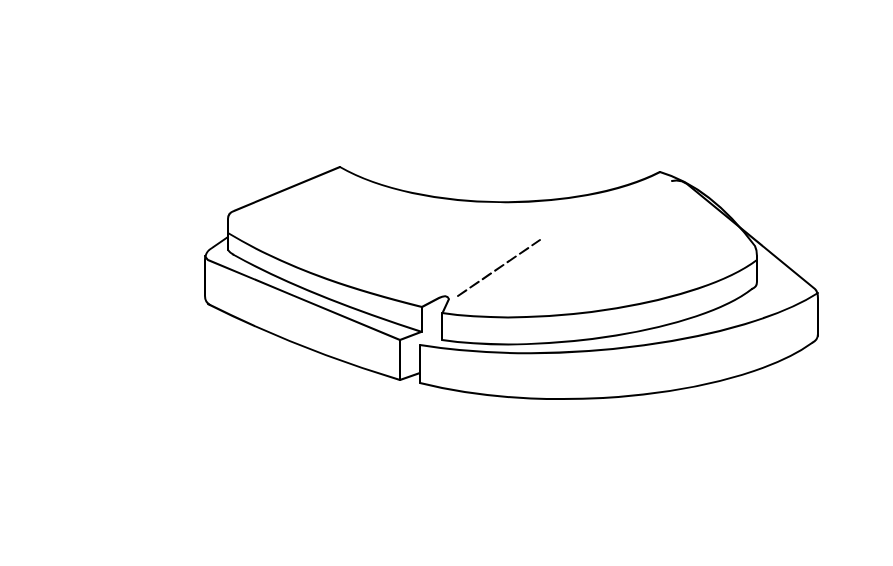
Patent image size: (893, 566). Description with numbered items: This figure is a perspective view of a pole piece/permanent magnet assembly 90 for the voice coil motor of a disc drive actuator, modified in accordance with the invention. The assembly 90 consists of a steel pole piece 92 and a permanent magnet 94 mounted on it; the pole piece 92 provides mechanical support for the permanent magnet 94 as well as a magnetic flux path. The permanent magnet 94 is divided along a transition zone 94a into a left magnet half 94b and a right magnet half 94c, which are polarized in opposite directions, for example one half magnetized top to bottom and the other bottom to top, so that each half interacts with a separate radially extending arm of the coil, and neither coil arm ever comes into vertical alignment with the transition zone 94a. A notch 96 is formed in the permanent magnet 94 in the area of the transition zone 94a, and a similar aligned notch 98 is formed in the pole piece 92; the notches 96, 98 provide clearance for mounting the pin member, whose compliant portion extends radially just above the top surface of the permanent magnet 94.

The pole piece/permanent magnet assembly 90 is at (183, 135).
The pole piece 92 is at (303, 330).
The permanent magnet 94 is at (580, 198).
The transition zone 94a is at (533, 245).
The left magnet half 94b is at (316, 204).
The right magnet half 94c is at (655, 240).
The notch 96 is at (442, 313).
The notch 98 is at (421, 344).